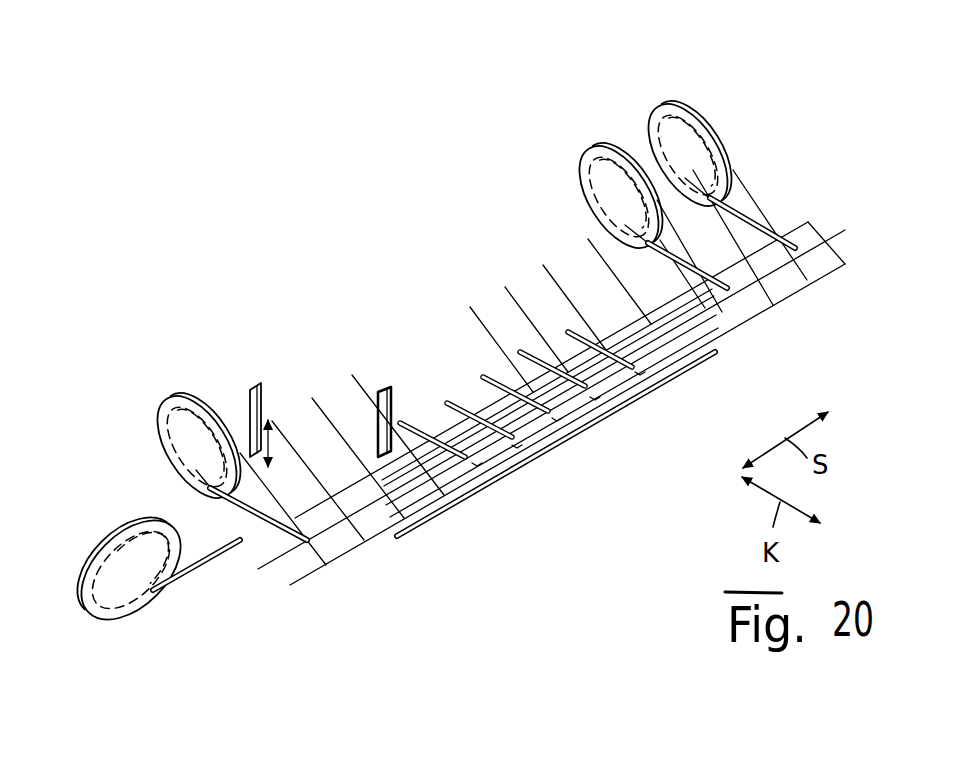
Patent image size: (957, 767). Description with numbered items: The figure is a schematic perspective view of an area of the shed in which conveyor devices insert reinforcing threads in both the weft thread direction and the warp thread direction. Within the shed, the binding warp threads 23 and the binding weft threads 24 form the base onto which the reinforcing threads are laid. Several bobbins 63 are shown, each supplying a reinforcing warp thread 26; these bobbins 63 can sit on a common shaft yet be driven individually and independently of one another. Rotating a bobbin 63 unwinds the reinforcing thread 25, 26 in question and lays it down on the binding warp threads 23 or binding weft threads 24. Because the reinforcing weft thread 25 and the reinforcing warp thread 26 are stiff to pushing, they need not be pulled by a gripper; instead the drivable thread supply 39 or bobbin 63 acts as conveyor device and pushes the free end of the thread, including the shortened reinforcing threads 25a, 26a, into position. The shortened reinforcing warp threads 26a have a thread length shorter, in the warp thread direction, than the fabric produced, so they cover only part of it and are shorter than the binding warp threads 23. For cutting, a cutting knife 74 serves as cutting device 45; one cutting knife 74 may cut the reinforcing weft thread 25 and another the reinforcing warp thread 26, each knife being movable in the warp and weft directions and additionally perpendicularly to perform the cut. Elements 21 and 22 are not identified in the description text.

The base frame 21 is at (348, 580).
The transport device 22 is at (605, 440).
The binding warp threads 23 is at (566, 330).
The binding weft threads 24 is at (265, 567).
The reinforcing weft thread 25 is at (188, 577).
The shortened reinforcing weft thread 25a is at (695, 333).
The reinforcing warp thread 26 is at (743, 212).
The shortened reinforcing warp thread 26a is at (567, 332).
The thread supply 39 is at (394, 369).
The bobbin 63 is at (663, 107).
The cutting device 45 is at (328, 374).
The cutting knife 74 is at (264, 370).